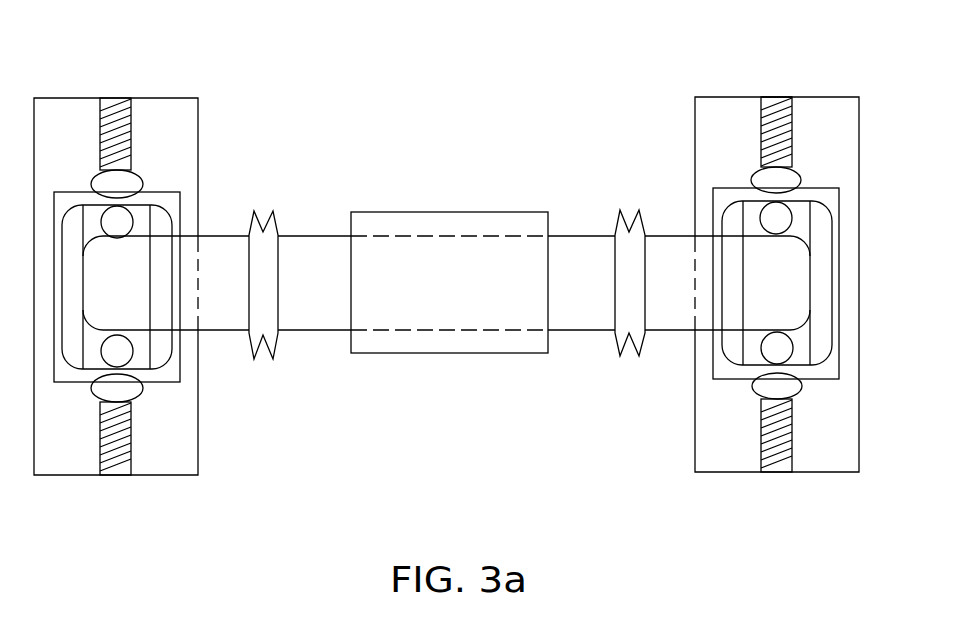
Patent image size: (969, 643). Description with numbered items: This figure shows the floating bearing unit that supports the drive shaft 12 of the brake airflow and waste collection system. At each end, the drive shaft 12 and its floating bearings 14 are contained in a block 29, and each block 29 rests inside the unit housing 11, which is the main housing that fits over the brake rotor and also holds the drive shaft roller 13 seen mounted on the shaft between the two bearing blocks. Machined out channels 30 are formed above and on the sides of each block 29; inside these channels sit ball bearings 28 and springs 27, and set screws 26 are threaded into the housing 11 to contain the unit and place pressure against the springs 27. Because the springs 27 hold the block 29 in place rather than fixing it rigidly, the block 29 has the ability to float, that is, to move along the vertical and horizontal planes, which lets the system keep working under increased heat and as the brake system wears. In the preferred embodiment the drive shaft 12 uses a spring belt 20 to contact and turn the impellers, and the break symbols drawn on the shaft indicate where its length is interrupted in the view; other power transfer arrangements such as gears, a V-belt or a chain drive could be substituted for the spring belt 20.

The main housing 11 is at (848, 460).
The drive shaft 12 is at (582, 235).
The drive shaft roller 13 is at (447, 212).
The floating bearings 14 is at (832, 340).
The spring belt 20 is at (261, 213).
The set screws 26 is at (786, 83).
The springs 27 is at (792, 140).
The ball bearings 28 is at (802, 178).
The block 29 is at (840, 200).
The machined out channels 30 is at (763, 97).